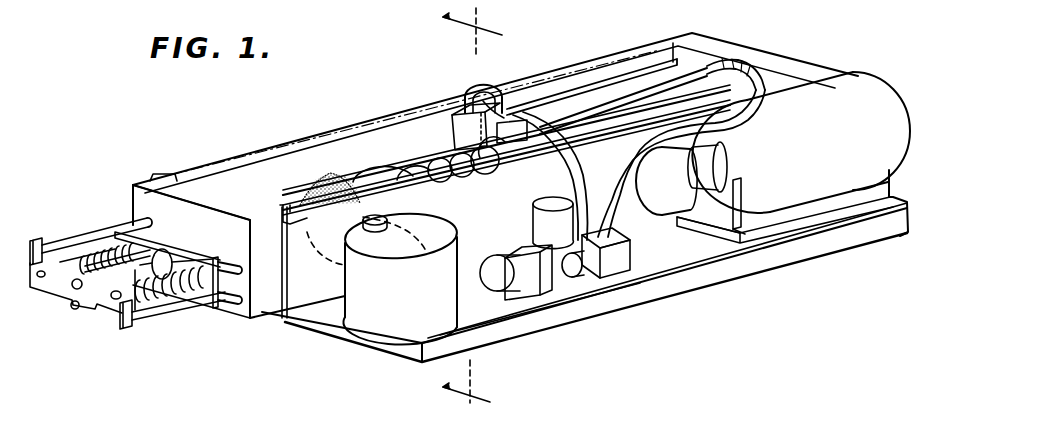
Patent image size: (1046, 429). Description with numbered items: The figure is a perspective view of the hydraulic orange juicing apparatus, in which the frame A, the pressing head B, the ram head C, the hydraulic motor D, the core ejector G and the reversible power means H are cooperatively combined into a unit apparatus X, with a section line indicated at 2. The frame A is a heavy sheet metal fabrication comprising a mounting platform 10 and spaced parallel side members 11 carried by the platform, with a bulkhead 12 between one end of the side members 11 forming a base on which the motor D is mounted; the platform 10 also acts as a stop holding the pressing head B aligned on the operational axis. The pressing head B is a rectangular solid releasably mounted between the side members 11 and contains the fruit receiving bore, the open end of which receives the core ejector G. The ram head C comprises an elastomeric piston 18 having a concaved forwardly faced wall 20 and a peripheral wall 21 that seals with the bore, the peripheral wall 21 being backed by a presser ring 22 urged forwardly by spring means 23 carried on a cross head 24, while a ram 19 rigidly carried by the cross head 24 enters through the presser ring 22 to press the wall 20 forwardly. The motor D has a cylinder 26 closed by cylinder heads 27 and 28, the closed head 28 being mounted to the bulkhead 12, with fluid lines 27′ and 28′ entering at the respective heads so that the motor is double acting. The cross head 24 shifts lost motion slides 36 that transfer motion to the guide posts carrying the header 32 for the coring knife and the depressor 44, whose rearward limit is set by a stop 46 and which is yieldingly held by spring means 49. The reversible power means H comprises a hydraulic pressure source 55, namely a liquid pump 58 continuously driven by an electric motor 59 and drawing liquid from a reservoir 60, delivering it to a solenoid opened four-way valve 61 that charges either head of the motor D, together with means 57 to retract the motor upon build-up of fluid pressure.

The section line 2- 2 is at (474, 201).
The mounting platform 10 is at (377, 350).
The side members 11 is at (283, 153).
The bulkhead 12 is at (795, 72).
The piston 18 is at (378, 178).
The ram 19 is at (446, 160).
The forwardly faced wall 20 is at (322, 195).
The peripheral wall 21 is at (360, 173).
The presser ring 22 is at (407, 178).
The spring means 23 is at (477, 168).
The cross head 24 is at (498, 160).
The cylinder 26 is at (568, 113).
The cylinder head 27 is at (453, 127).
The fluid line 27′ is at (573, 178).
The cylinder head 28 is at (712, 60).
The fluid line 28′ is at (758, 68).
The header 32 is at (230, 307).
The lost motion slides 36 is at (290, 182).
The depressor 44 is at (53, 287).
The stop 46 is at (40, 242).
The spring means 49 is at (90, 250).
The hydraulic pressure source 55 is at (762, 195).
The means to retract the motor 57 is at (607, 270).
The liquid pump 58 is at (764, 194).
The electric motor 59 is at (801, 142).
The reservoir 60 is at (401, 277).
The solenoid opened valve 61 is at (545, 290).
The frame A is at (646, 306).
The pressing head B is at (130, 185).
The ram head C is at (340, 172).
The hydraulic motor D is at (618, 80).
The core ejector G is at (80, 292).
The reversible power means H is at (647, 216).
The unit apparatus X is at (226, 126).